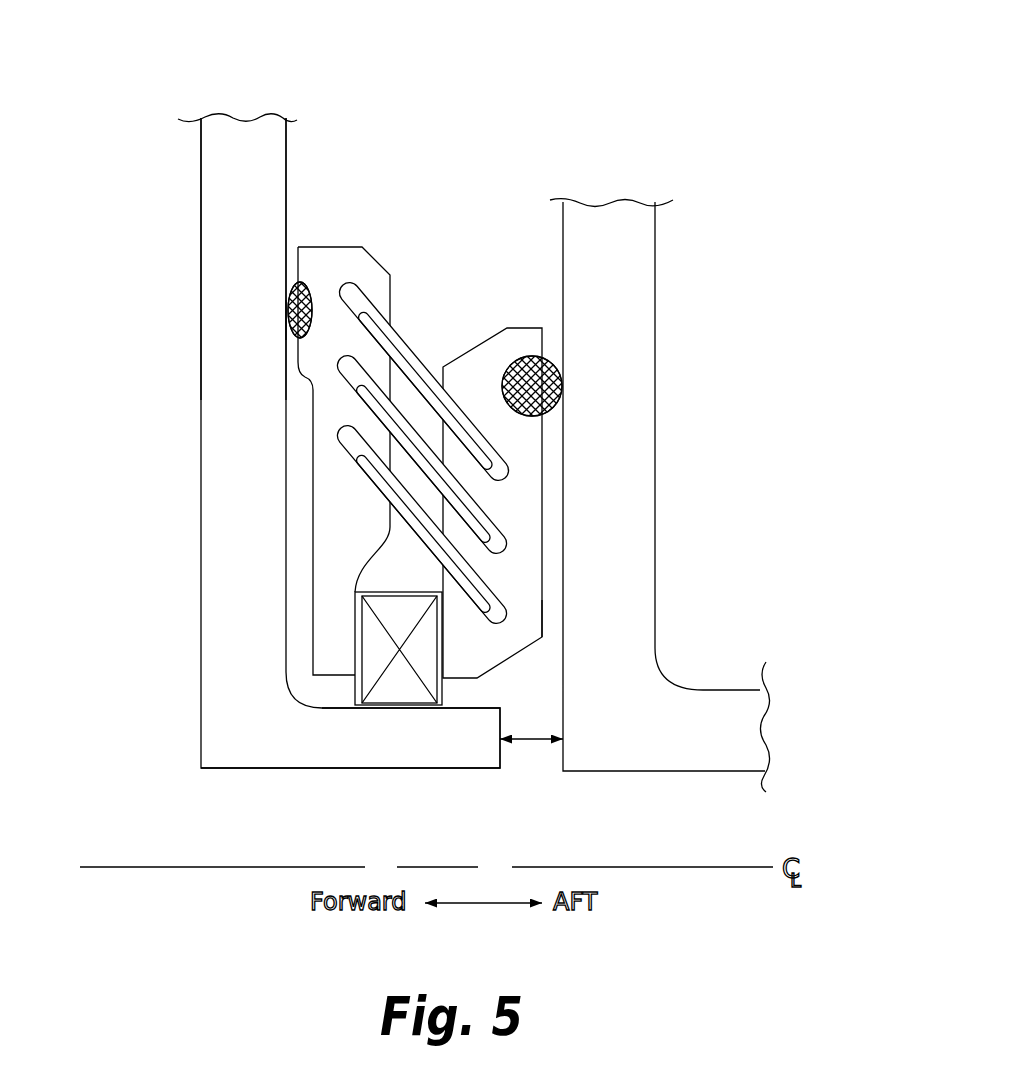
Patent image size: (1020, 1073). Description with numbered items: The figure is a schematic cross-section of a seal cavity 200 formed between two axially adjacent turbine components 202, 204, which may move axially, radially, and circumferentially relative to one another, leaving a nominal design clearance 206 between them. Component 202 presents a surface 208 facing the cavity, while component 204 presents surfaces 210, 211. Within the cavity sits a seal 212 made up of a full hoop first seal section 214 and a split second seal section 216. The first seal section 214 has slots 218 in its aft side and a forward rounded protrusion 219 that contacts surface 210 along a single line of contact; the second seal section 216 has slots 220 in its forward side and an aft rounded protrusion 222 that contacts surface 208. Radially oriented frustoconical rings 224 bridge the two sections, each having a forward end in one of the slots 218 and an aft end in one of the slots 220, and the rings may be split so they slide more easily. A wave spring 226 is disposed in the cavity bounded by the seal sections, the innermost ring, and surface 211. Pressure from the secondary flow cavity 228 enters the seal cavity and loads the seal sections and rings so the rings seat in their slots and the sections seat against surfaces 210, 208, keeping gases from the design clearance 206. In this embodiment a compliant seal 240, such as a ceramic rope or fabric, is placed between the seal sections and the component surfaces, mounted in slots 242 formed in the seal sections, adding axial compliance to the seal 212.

The seal cavity 200 is at (592, 100).
The turbine component 202 is at (713, 772).
The turbine component 204 is at (233, 768).
The nominal design clearance 206 is at (533, 741).
The surface 208 is at (563, 237).
The surface 210 is at (286, 153).
The surface 211 is at (461, 700).
The seal 212 is at (440, 145).
The first seal section 214 is at (313, 440).
The second seal section 216 is at (530, 607).
The slots 218 is at (340, 428).
The forward substantially rounded protrusion 219 is at (288, 327).
The slots 220 is at (510, 472).
The aft substantially rounded protrusion 222 is at (563, 387).
The frustoconical rings 224 is at (497, 445).
The wave spring 226 is at (350, 697).
The secondary flow cavity 228 is at (453, 33).
The compliant seal 240 is at (285, 308).
The slots 242 is at (311, 282).